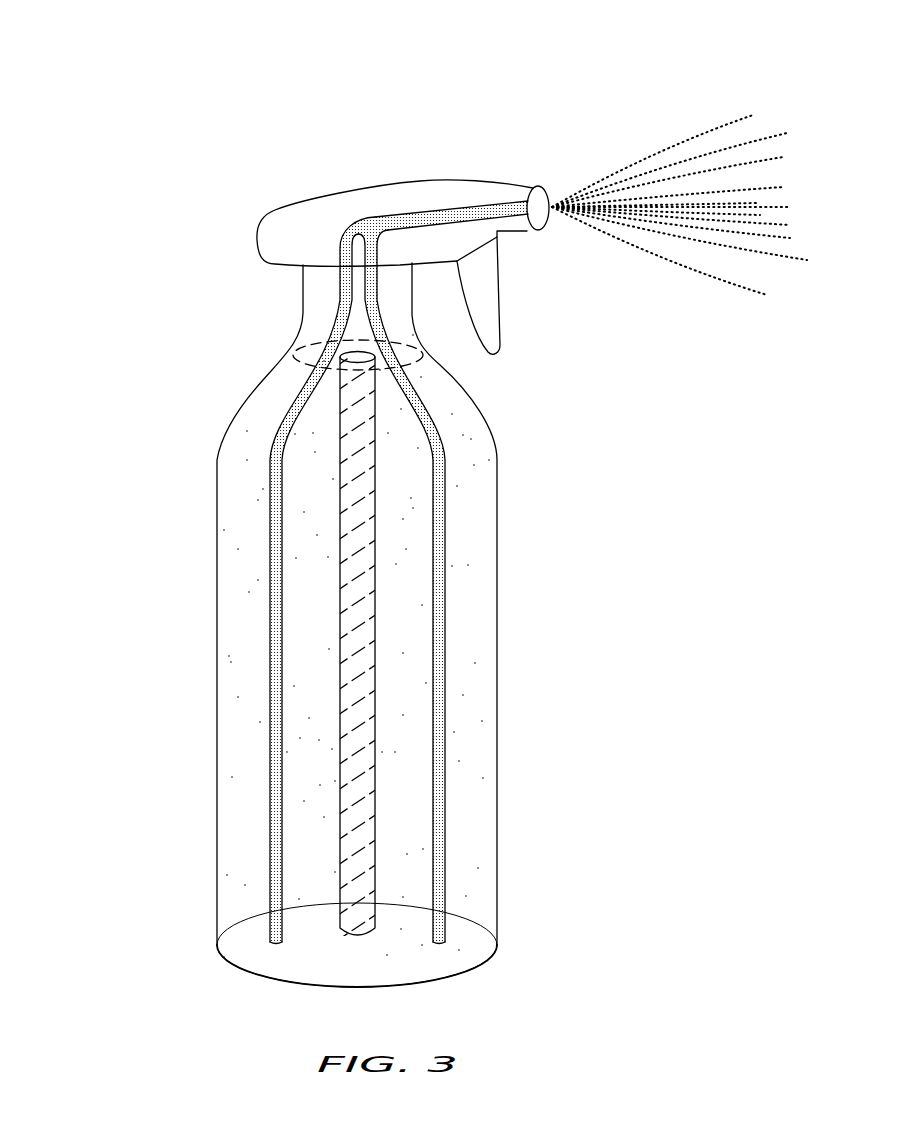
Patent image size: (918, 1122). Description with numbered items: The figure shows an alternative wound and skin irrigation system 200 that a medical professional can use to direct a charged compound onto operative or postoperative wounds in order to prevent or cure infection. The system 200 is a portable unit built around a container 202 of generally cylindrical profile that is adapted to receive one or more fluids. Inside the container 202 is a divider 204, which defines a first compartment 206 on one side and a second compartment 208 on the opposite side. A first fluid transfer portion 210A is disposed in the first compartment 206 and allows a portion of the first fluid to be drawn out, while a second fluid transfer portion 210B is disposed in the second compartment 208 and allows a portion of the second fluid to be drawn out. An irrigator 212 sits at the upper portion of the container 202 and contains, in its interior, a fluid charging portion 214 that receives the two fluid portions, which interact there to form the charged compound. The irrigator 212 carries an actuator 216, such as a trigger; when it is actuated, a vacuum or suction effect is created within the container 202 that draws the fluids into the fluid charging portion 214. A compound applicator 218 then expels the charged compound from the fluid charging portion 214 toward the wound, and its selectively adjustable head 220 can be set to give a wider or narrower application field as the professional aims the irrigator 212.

The wound and/or skin irrigation system 200 is at (108, 40).
The container 202 is at (217, 569).
The divider 204 is at (340, 427).
The first compartment 206 is at (248, 755).
The second compartment 208 is at (467, 650).
The first fluid transfer portion 210A is at (268, 487).
The second fluid transfer portion 210B is at (447, 820).
The irrigator 212 is at (259, 236).
The fluid charging portion 214 is at (366, 222).
The actuator 216 is at (505, 338).
The compound applicator 218 is at (541, 212).
The selectively adjustable head 220 is at (539, 205).